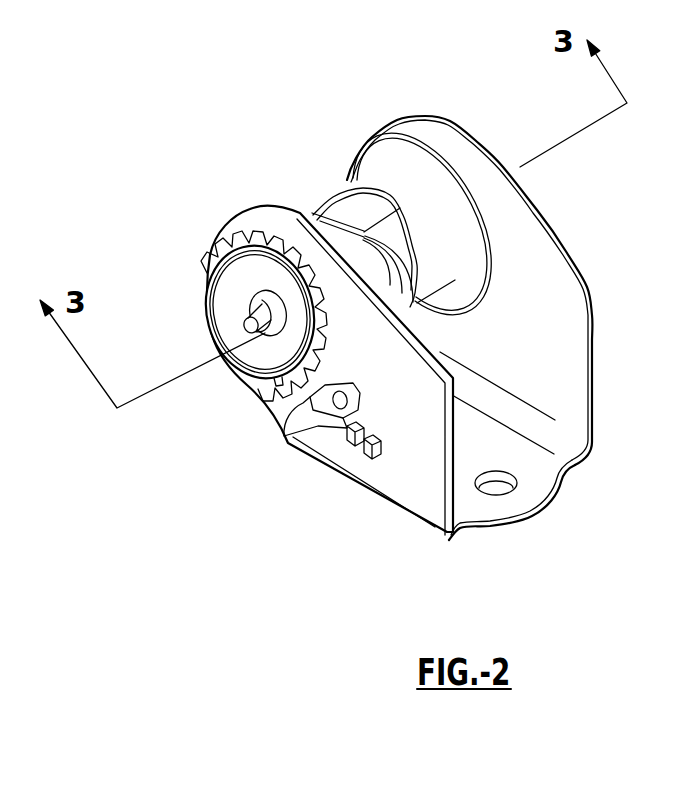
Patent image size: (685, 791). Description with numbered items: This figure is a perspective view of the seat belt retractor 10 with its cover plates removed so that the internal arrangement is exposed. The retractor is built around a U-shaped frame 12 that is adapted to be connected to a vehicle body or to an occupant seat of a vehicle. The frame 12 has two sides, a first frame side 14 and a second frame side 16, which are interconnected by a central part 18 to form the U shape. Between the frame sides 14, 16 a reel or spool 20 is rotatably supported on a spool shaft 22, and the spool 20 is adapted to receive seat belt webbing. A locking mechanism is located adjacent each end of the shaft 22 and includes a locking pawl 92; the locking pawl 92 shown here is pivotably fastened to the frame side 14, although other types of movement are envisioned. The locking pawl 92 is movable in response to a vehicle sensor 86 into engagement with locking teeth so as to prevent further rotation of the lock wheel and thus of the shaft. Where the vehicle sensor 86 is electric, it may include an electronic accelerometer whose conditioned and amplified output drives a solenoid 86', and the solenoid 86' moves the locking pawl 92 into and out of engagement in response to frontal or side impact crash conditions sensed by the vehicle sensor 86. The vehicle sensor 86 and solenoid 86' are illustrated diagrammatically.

The seat belt retractor 10 is at (429, 305).
The U-shaped frame 12 is at (438, 343).
The frame side 14 is at (427, 473).
The frame side 16 is at (592, 367).
The central part 18 is at (547, 489).
The spool 20 is at (382, 180).
The spool shaft 22 is at (253, 380).
The vehicle sensor 86 is at (340, 492).
The solenoid 86' is at (307, 476).
The locking pawl 92 is at (282, 430).